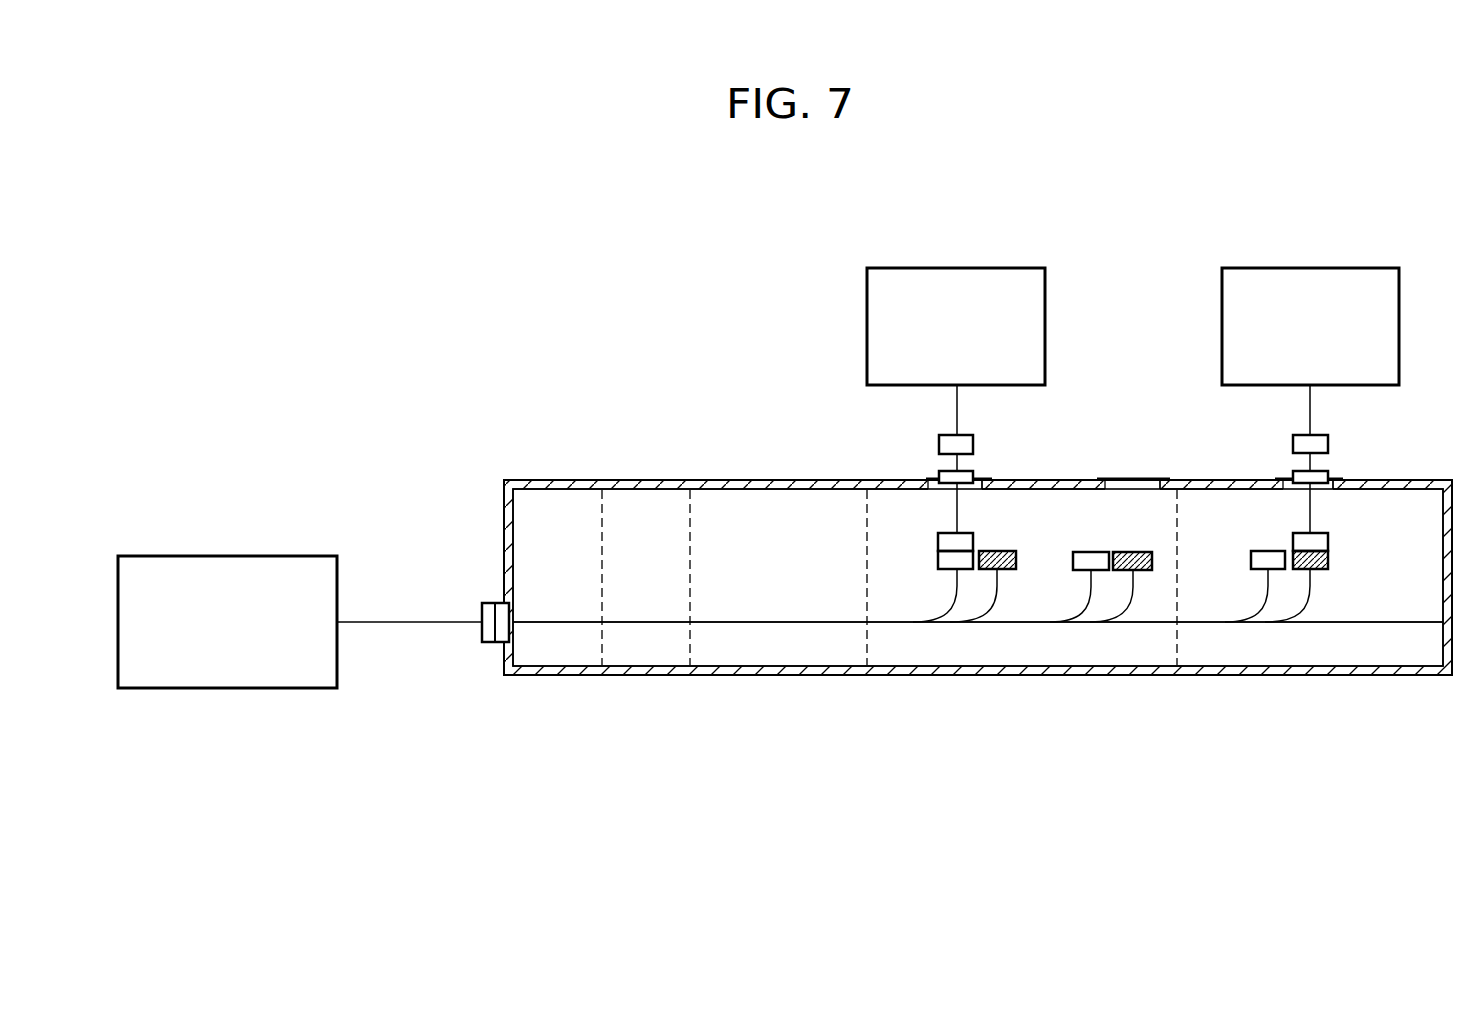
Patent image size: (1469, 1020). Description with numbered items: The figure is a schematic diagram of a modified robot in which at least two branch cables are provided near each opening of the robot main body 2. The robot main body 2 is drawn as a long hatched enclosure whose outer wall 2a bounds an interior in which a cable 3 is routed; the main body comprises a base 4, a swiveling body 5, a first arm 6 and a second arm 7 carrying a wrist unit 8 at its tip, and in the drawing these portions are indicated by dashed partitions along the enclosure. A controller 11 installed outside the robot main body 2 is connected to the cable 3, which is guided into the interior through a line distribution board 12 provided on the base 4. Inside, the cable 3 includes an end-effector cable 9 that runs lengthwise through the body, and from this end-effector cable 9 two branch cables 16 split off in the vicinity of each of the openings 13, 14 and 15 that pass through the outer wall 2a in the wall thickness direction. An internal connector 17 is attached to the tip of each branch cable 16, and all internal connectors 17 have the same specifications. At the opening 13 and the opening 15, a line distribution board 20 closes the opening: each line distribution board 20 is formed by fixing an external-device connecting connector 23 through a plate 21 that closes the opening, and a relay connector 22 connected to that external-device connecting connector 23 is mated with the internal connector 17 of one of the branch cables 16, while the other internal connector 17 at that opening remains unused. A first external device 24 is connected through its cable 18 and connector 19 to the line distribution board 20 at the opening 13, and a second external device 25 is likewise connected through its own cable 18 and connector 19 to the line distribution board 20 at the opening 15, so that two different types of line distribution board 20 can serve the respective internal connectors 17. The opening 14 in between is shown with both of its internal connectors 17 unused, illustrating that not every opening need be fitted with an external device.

The robot main body 2 is at (566, 455).
The outer wall 2a is at (745, 480).
The cable 3 is at (900, 640).
The base 4 is at (574, 676).
The swiveling body 5 is at (637, 676).
The first arm 6 is at (763, 676).
The second arm 7 is at (1017, 676).
The wrist unit 8 is at (1310, 690).
The end-effector cable 9 is at (833, 624).
The controller 11 is at (212, 555).
The line distribution board 12 is at (488, 600).
The opening 13 is at (980, 491).
The opening 14 is at (1155, 491).
The opening 15 is at (1330, 491).
The branch cable 16 is at (945, 596).
The internal connector 17 is at (937, 560).
The cable 18 is at (955, 406).
The connector 19 is at (975, 444).
The line distribution board 20 is at (915, 470).
The plate 21 is at (982, 472).
The relay connector 22 is at (937, 545).
The external-device connecting connector 23 is at (936, 486).
The first external device 24 is at (950, 268).
The second external device 25 is at (1310, 268).